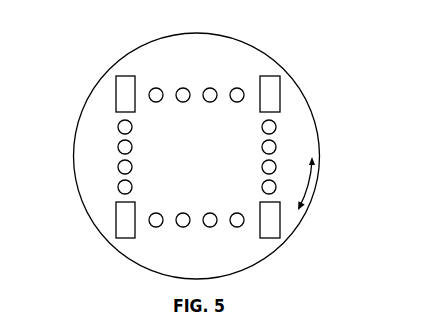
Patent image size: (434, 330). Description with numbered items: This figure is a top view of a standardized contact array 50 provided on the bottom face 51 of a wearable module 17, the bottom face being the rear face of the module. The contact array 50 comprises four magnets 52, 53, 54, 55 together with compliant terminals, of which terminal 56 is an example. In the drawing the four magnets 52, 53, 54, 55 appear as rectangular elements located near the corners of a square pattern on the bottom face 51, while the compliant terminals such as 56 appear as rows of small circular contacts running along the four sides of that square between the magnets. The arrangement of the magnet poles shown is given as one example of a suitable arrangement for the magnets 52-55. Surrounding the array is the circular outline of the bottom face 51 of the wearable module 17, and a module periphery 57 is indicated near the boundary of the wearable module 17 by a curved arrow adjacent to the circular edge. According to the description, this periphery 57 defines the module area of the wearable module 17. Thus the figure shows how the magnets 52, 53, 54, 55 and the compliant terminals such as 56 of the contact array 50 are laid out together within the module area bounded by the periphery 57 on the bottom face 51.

The contact array 50 is at (300, 55).
The bottom face 51 is at (205, 53).
The magnet 52 is at (122, 87).
The magnet 53 is at (271, 95).
The magnet 54 is at (120, 222).
The magnet 55 is at (270, 222).
The compliant terminal 56 is at (117, 167).
The wearable module 17 is at (289, 138).
The module periphery 57 is at (313, 188).